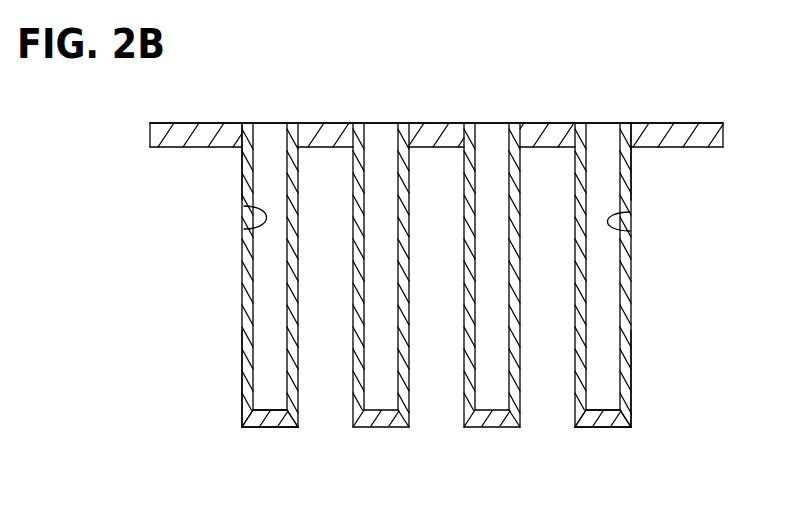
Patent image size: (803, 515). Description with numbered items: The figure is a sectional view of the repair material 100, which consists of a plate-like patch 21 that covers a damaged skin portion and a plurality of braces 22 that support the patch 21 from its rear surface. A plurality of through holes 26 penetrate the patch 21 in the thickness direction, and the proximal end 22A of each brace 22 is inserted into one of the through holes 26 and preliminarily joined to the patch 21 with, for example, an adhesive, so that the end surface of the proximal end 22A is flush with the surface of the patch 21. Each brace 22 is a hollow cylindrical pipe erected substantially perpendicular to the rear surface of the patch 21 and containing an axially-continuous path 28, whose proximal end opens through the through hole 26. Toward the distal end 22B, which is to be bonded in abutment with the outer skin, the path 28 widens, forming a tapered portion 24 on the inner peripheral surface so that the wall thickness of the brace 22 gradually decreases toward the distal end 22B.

The repair material 100 is at (449, 108).
The patch 21 is at (697, 123).
The brace 22 is at (242, 262).
The proximal end 22A is at (242, 160).
The distal end 22B is at (243, 398).
The tapered portion 24 is at (262, 414).
The through hole 26 is at (287, 134).
The path 28 is at (244, 222).